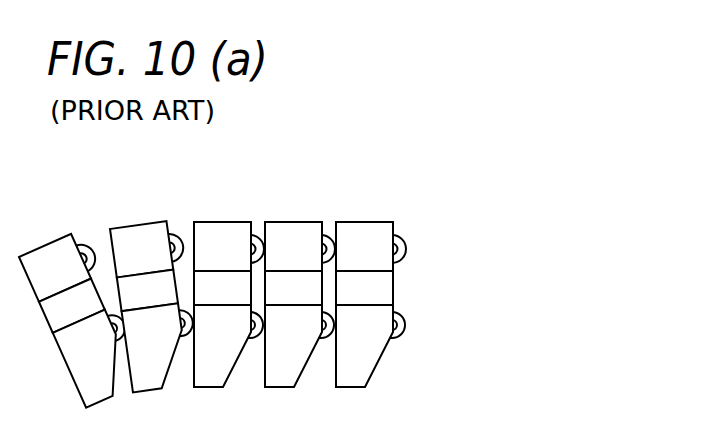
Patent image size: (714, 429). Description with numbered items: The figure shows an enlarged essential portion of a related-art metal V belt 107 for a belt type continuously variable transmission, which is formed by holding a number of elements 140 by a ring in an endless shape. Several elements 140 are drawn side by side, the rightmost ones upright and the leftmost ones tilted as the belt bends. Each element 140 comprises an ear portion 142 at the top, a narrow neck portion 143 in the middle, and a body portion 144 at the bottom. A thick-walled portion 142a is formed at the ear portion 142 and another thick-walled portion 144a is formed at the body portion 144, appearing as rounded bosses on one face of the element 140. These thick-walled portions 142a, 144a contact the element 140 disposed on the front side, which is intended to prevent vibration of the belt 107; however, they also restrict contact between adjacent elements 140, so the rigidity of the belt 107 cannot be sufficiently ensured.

The belt 107 is at (266, 272).
The element 140 is at (414, 272).
The ear portion 142 is at (403, 239).
The thick-walled portion 142a is at (435, 253).
The neck portion 143 is at (403, 288).
The body portion 144 is at (391, 346).
The thick-walled portion 144a is at (435, 325).